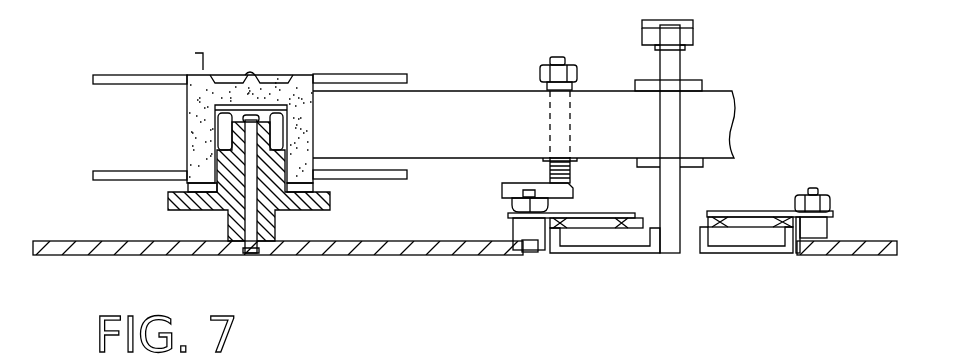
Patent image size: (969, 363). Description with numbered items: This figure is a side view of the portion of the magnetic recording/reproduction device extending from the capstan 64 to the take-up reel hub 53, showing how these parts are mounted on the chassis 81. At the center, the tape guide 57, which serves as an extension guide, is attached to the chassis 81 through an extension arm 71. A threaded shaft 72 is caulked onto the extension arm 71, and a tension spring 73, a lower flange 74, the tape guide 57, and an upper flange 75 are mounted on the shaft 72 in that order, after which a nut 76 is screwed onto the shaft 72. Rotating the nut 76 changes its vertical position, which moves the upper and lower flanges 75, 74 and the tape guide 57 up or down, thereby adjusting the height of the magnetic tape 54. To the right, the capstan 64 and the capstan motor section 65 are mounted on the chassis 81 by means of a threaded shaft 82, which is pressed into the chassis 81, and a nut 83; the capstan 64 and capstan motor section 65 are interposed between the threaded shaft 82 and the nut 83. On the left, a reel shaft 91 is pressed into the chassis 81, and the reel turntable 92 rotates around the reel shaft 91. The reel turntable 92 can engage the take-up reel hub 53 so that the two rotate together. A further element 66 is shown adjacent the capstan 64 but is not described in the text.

The take-up reel hub 53 is at (300, 82).
The magnetic tape 54 is at (418, 102).
The tape guide 57 is at (570, 115).
The capstan 64 is at (672, 66).
The capstan motor section 65 is at (727, 252).
The collar 66 is at (700, 160).
The extension arm 71 is at (565, 192).
The threaded shaft 72 is at (557, 57).
The tension spring 73 is at (573, 176).
The lower flange 74 is at (548, 159).
The upper flange 75 is at (572, 84).
The nut 76 is at (572, 70).
The chassis 81 is at (70, 252).
The threaded shaft 82 is at (822, 228).
The nut 83 is at (828, 200).
The reel shaft 91 is at (268, 250).
The reel turntable 92 is at (315, 205).